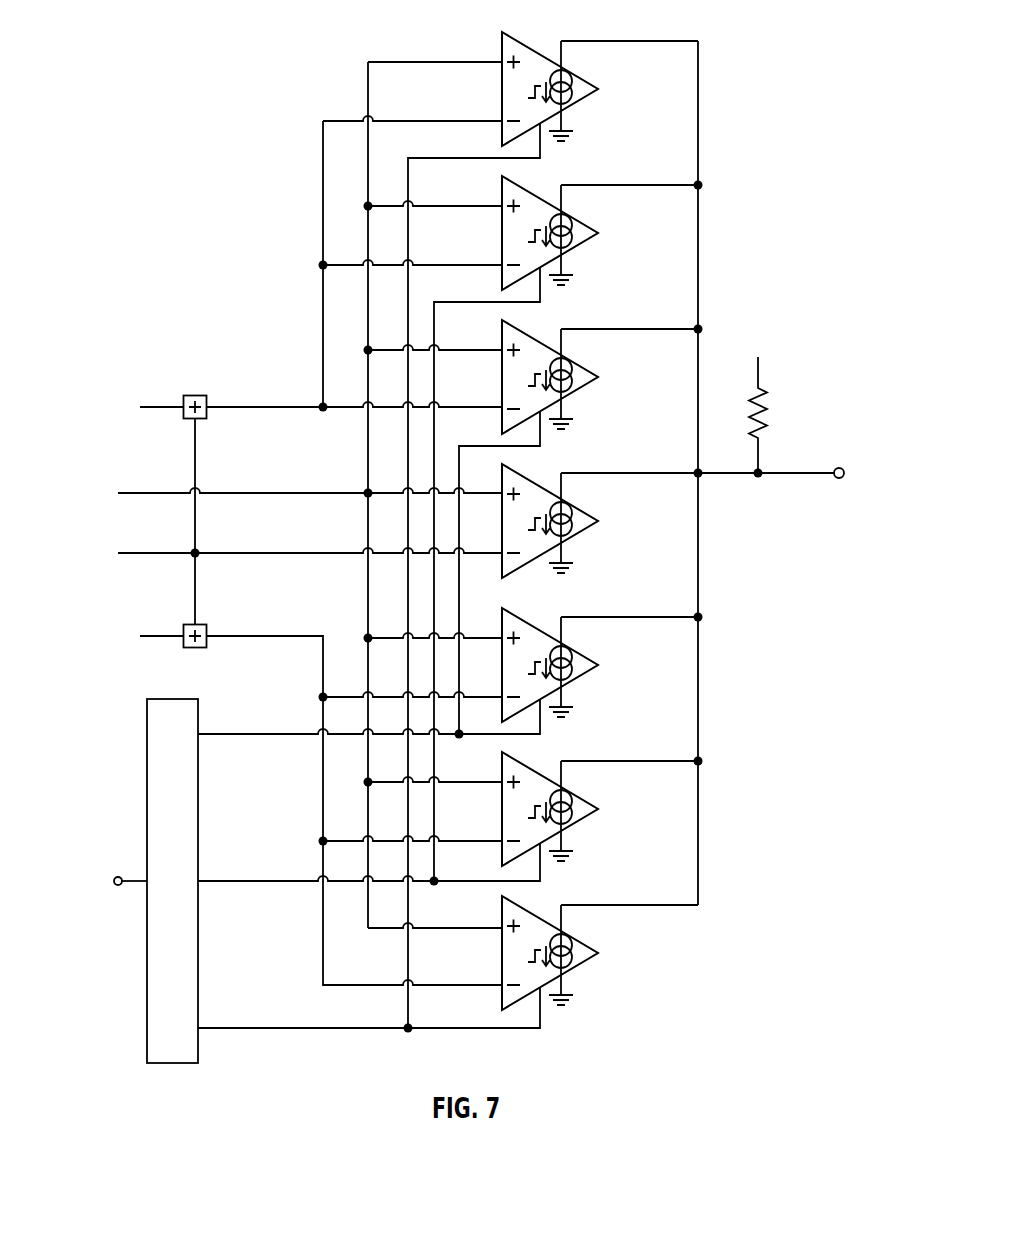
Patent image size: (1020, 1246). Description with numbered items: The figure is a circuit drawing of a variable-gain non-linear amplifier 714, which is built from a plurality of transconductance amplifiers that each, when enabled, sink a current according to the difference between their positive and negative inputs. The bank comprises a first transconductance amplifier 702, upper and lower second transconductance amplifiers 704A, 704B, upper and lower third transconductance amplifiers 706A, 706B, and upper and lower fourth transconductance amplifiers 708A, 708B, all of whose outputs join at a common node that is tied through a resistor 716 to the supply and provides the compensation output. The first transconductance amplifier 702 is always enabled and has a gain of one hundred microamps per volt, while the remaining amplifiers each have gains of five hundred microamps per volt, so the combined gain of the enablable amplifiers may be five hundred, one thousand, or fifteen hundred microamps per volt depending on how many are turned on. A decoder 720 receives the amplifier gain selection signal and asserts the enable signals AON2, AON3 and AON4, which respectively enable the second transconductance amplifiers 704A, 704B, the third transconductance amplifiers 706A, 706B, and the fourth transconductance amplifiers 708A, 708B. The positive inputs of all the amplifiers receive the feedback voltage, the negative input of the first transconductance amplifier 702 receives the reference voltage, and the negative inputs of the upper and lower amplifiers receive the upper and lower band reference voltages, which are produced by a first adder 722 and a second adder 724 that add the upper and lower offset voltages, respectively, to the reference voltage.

The variable-gain non-linear amplifier 714 is at (240, 69).
The first transconductance amplifier 702 is at (600, 522).
The upper second transconductance amplifier 704A is at (600, 378).
The lower second transconductance amplifier 704B is at (600, 666).
The upper third transconductance amplifier 706A is at (600, 234).
The lower third transconductance amplifier 706B is at (600, 810).
The upper fourth transconductance amplifier 708A is at (585, 40).
The lower fourth transconductance amplifier 708B is at (600, 954).
The resistor 716 is at (768, 411).
The decoder 720 is at (147, 755).
The first adder 722 is at (184, 395).
The second adder 724 is at (184, 648).